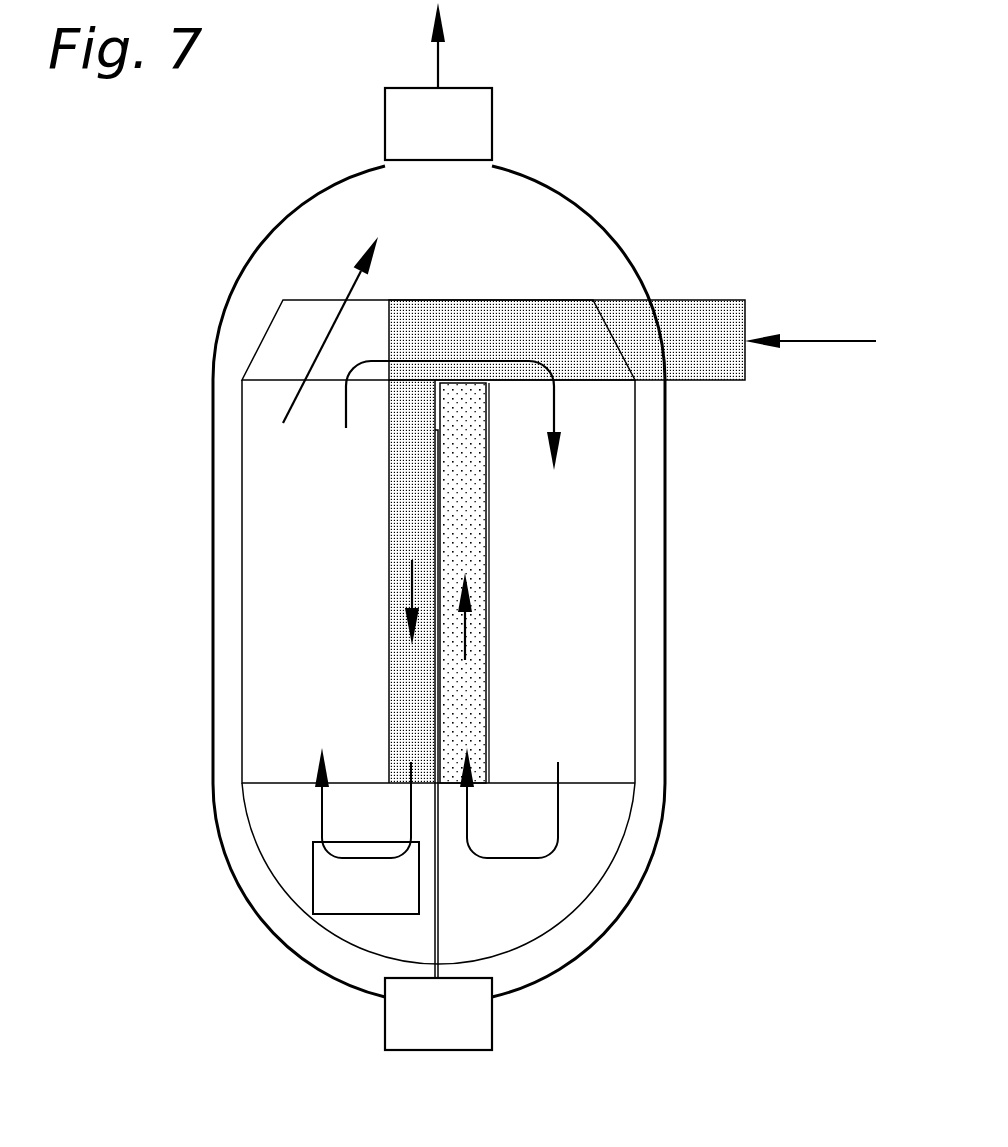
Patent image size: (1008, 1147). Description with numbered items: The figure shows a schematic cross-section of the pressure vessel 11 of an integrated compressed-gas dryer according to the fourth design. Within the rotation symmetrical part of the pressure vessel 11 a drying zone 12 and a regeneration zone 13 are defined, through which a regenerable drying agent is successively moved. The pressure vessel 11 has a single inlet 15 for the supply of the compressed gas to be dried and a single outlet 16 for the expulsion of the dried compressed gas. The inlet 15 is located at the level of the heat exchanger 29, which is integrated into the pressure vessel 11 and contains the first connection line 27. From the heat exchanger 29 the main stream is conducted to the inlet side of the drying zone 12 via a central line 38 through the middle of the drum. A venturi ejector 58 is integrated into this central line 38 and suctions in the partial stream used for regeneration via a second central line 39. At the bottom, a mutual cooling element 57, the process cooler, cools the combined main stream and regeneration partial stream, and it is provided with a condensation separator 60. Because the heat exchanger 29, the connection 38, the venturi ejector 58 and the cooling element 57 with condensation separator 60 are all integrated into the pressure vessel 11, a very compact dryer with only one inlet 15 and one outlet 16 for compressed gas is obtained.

The pressure vessel 11 is at (665, 590).
The drying zone 12 is at (327, 594).
The regeneration zone 13 is at (580, 594).
The inlet 15 is at (632, 340).
The outlet 16 is at (438, 81).
The first connection line 27 is at (554, 415).
The heat exchanger 29 is at (255, 356).
The central line 38 is at (413, 687).
The second central line 39 is at (465, 642).
The cooling element 57 is at (320, 895).
The venturi ejector 58 is at (412, 525).
The condensation separator 60 is at (438, 1014).